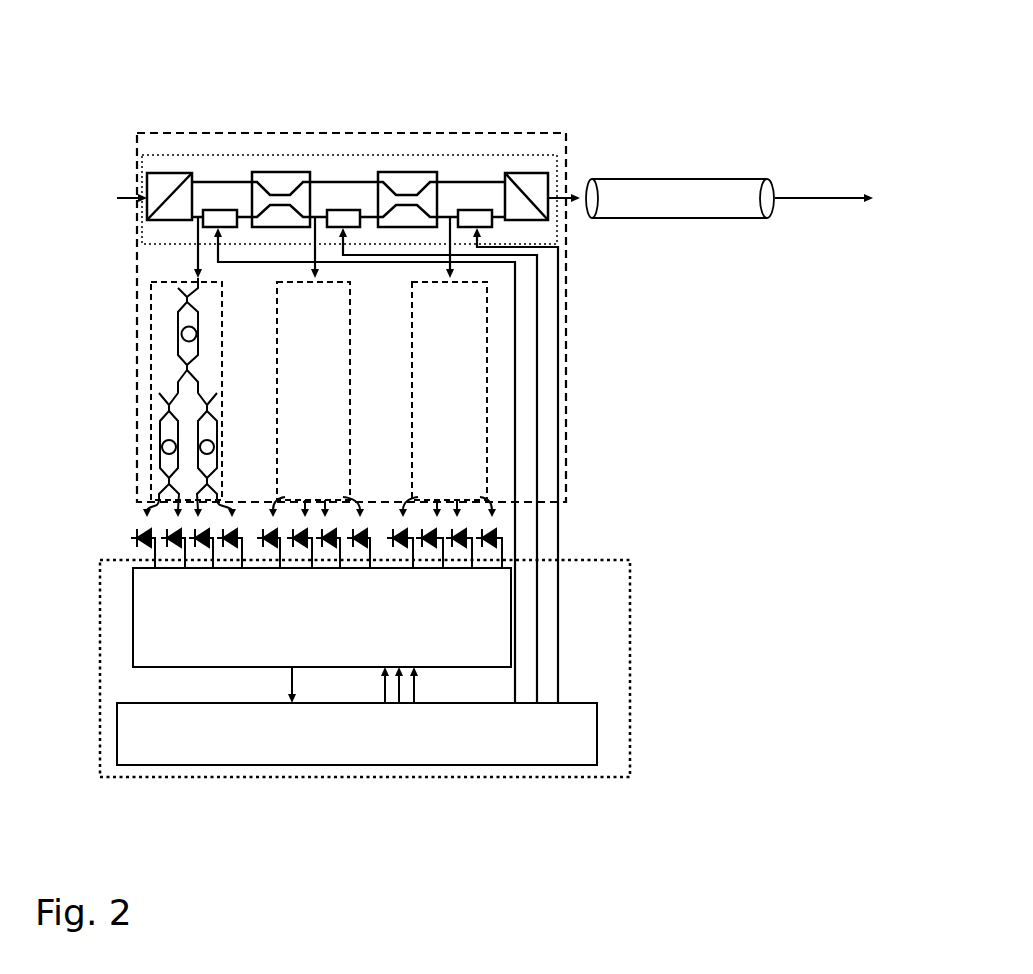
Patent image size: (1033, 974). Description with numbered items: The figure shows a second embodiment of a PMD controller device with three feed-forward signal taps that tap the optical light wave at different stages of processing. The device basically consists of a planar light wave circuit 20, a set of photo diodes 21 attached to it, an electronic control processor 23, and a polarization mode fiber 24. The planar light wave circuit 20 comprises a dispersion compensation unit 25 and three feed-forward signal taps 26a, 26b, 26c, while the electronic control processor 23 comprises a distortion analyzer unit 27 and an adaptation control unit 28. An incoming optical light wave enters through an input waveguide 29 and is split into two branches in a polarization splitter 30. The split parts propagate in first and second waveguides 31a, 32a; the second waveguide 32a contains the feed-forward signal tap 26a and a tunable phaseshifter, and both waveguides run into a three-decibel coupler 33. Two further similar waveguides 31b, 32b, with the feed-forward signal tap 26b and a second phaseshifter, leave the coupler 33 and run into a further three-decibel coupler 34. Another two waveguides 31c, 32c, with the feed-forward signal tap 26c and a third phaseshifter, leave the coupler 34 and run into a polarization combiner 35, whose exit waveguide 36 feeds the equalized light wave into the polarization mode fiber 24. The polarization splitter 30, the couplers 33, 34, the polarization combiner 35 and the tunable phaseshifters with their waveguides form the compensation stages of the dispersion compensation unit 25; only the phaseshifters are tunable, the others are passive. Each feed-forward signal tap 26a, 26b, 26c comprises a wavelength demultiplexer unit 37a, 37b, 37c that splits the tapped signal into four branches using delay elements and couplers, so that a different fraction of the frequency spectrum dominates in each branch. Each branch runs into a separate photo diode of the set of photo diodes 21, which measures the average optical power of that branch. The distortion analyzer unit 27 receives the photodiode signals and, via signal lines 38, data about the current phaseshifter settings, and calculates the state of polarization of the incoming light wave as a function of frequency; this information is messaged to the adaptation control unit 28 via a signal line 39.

The planar light wave circuit 20 is at (551, 133).
The set of photo diodes 21 is at (137, 538).
The electronic control processor 23 is at (600, 590).
The polarization mode fiber 24 is at (657, 195).
The dispersion compensation unit 25 is at (550, 164).
The feed-forward signal tap 26a is at (216, 229).
The feed-forward signal tap 26b is at (262, 230).
The feed-forward signal tap 26c is at (452, 252).
The distortion analyzer unit 27 is at (322, 617).
The adaptation control unit 28 is at (357, 734).
The input waveguide 29 is at (136, 198).
The polarization splitter 30 is at (168, 182).
The first waveguide 31a is at (210, 188).
The waveguide 31b is at (322, 188).
The waveguide 31c is at (460, 184).
The second waveguide 32a is at (245, 213).
The waveguide 32b is at (363, 213).
The waveguide 32c is at (495, 212).
The 3 dB coupler 33 is at (276, 182).
The 3 dB coupler 34 is at (405, 182).
The polarization combiner 35 is at (528, 180).
The exit waveguide 36 is at (550, 206).
The wavelength demultiplexer unit 37a is at (165, 322).
The wavelength demultiplexer unit 37b is at (316, 399).
The wavelength demultiplexer unit 37c is at (447, 399).
The signal lines 38 is at (410, 685).
The signal line 39 is at (292, 683).